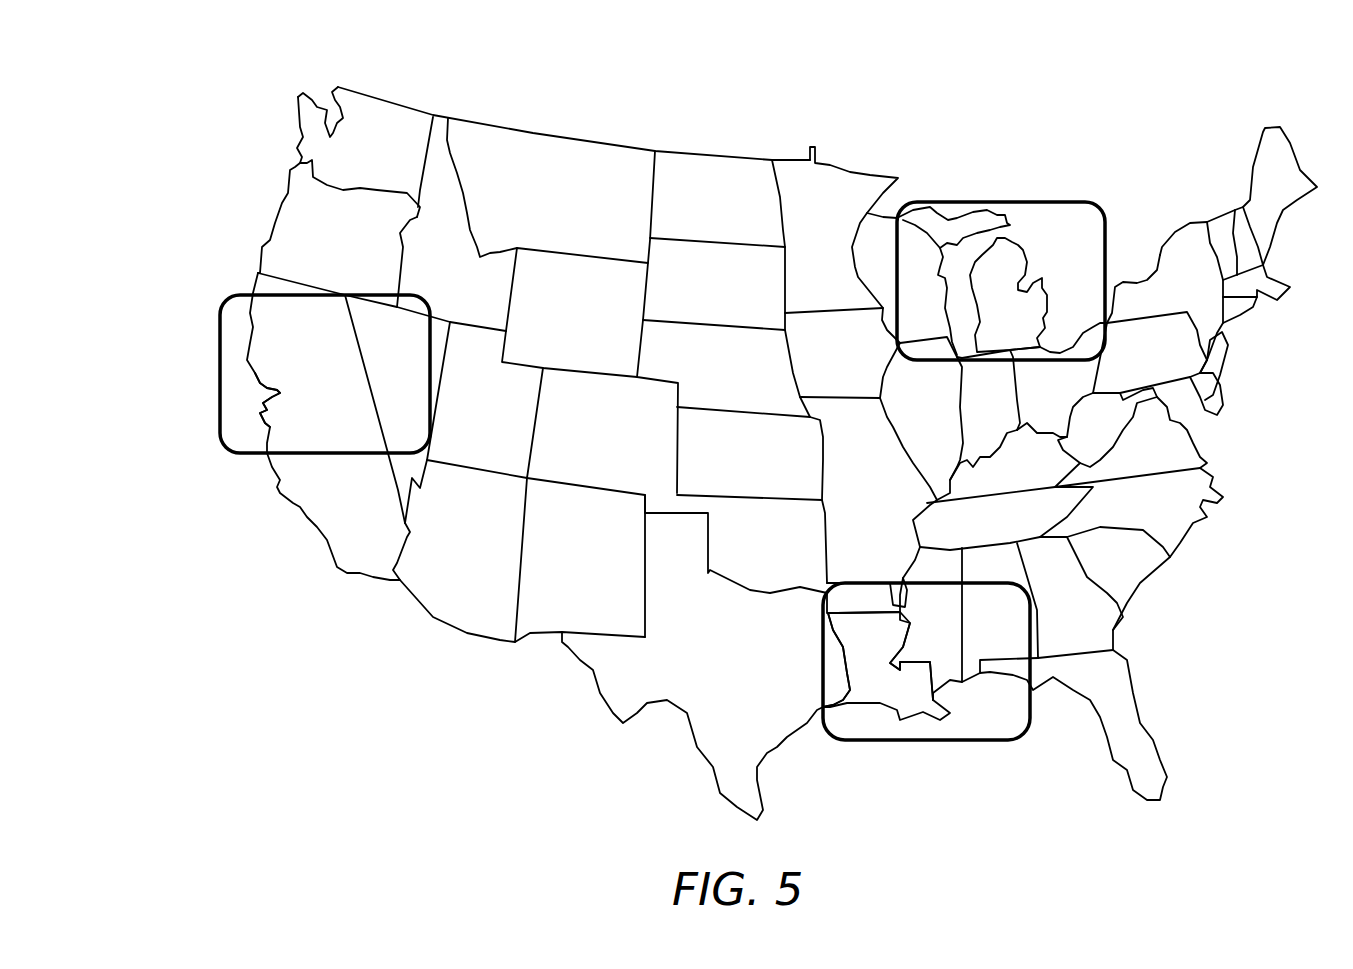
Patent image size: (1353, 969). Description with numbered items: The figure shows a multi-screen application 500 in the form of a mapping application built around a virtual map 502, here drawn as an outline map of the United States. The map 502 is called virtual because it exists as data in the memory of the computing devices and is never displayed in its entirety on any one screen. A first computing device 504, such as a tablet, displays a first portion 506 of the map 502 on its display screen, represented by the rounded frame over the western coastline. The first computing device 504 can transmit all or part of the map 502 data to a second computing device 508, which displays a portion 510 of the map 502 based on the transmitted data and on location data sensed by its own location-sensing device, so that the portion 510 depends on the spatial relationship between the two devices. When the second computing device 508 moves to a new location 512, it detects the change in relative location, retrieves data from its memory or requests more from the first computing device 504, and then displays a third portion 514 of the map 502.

The multi-screen application 500 is at (247, 41).
The virtual map 502 is at (530, 72).
The first computing device 504 is at (240, 295).
The first portion 506 is at (262, 421).
The second computing device 508 is at (1075, 203).
The portion of map 510 is at (1023, 238).
The new location 512 is at (990, 742).
The third portion 514 is at (897, 712).